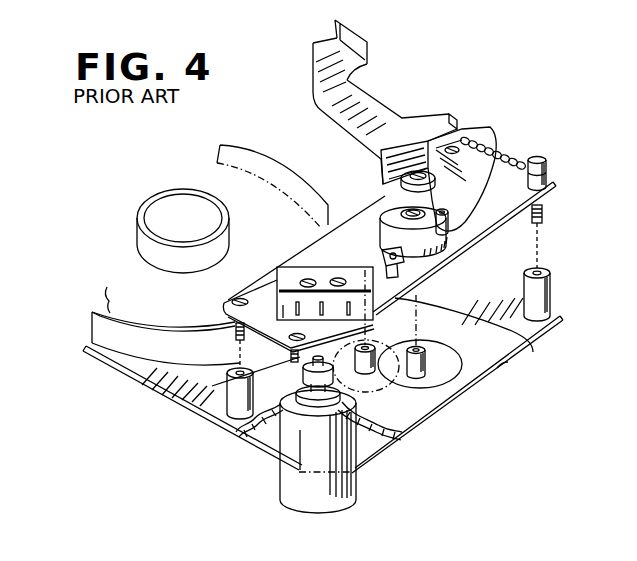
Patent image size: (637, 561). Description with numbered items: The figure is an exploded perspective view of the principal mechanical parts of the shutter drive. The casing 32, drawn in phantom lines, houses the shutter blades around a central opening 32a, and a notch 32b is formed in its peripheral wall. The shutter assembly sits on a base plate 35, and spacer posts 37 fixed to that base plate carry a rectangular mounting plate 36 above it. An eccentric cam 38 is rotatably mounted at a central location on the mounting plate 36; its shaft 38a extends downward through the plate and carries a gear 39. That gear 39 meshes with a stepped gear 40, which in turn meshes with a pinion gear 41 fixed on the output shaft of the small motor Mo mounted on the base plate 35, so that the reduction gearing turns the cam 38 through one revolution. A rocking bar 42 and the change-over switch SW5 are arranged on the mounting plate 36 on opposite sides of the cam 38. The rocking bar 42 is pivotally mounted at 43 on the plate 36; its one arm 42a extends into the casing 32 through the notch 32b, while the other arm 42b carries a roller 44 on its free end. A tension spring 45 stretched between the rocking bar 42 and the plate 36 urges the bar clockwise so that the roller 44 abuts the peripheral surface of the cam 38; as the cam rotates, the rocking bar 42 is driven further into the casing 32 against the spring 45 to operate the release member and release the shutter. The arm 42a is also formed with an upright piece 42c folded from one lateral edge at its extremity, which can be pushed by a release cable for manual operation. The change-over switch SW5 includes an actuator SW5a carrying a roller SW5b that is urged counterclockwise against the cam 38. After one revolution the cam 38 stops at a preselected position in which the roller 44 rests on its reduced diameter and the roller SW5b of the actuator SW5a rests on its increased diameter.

The casing 32 is at (92, 333).
The central opening 32a is at (180, 228).
The notch 32b is at (281, 136).
The base plate 35 is at (157, 387).
The mounting plate 36 is at (320, 240).
The spacer posts 37 is at (561, 268).
The eccentric cam 38 is at (383, 227).
The shaft 38a is at (432, 352).
The gear 39 is at (445, 392).
The stepped gear 40 is at (403, 432).
The pinion gear 41 is at (302, 372).
The rocking bar 42 is at (336, 105).
The one arm of rocking bar 42a is at (313, 52).
The other arm of rocking bar 42b is at (459, 194).
The upright piece 42c is at (365, 33).
The pivot 43 is at (390, 162).
The roller 44 is at (482, 234).
The tension spring 45 is at (490, 142).
The change-over switch SW5 is at (257, 280).
The actuator SW5a is at (500, 368).
The roller SW5b is at (533, 337).
The small motor Mo is at (356, 500).